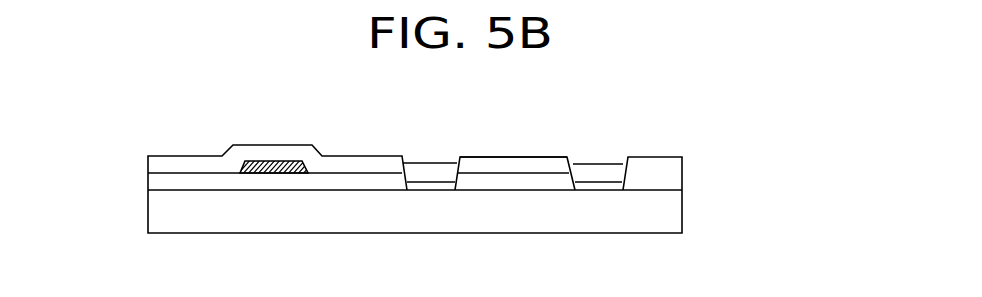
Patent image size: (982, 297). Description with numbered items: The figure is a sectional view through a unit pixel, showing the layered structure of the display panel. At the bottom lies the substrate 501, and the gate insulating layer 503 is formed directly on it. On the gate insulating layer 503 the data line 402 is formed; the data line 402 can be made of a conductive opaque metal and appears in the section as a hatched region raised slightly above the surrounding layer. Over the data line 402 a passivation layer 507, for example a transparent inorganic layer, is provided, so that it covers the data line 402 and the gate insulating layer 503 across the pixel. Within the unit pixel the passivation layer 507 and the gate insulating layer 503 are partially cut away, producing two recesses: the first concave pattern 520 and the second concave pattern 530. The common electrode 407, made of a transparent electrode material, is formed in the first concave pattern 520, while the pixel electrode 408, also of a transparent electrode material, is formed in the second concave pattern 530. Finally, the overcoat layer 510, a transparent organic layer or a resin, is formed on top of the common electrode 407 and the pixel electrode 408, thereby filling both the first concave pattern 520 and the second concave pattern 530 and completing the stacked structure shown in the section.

The substrate 501 is at (228, 212).
The gate insulating layer 503 is at (175, 183).
The passivation layer 507 is at (173, 172).
The data line 402 is at (268, 162).
The first concave pattern 520 is at (419, 151).
The second concave pattern 530 is at (612, 148).
The common electrode 407 is at (433, 186).
The pixel electrode 408 is at (599, 186).
The overcoat layer 510 is at (583, 171).